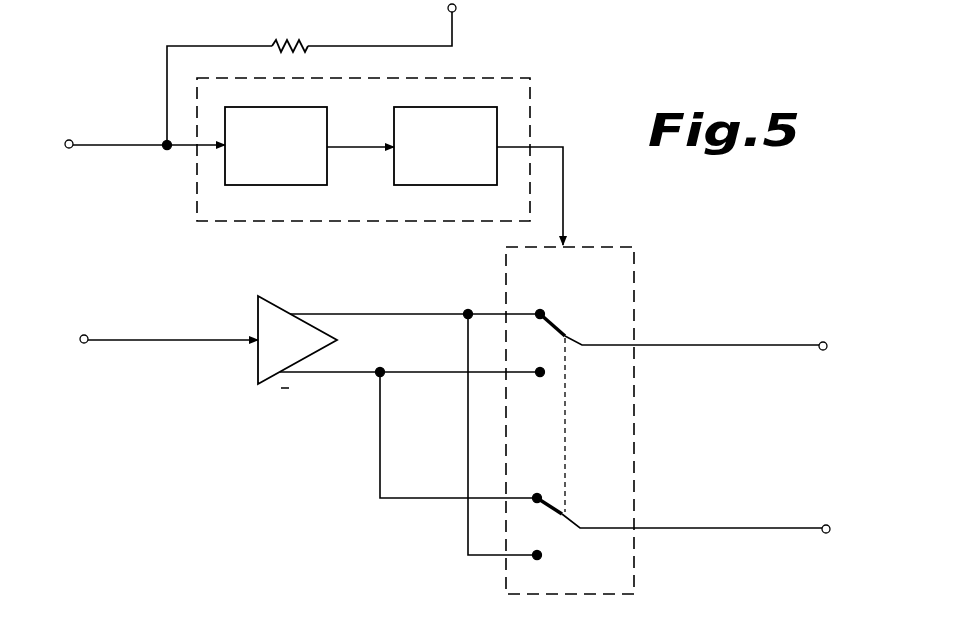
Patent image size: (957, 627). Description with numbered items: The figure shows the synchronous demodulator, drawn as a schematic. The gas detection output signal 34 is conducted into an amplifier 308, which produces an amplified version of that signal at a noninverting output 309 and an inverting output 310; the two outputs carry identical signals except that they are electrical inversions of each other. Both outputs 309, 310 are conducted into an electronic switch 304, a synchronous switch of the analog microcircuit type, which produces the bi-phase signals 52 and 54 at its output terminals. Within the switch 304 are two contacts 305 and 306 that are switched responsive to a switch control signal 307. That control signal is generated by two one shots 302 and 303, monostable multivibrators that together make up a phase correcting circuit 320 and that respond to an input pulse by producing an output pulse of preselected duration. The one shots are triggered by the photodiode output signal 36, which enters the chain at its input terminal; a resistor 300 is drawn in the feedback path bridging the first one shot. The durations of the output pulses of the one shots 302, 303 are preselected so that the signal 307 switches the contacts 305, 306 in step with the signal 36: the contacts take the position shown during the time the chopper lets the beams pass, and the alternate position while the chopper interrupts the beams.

The gas detection output signal 34 is at (96, 340).
The photodiode output signal 36 is at (78, 148).
The bi-phase signal 52 is at (800, 348).
The bi-phase signal 54 is at (802, 531).
The resistor 300 is at (272, 44).
The one shot 302 is at (300, 187).
The one shot 303 is at (476, 187).
The electronic switch 304 is at (630, 552).
The contact 305 is at (584, 330).
The contact 306 is at (583, 513).
The switch control signal 307 is at (563, 186).
The amplifier 308 is at (297, 355).
The noninverting output 309 is at (322, 313).
The inverting output 310 is at (364, 372).
The phase correcting circuit 320 is at (470, 78).